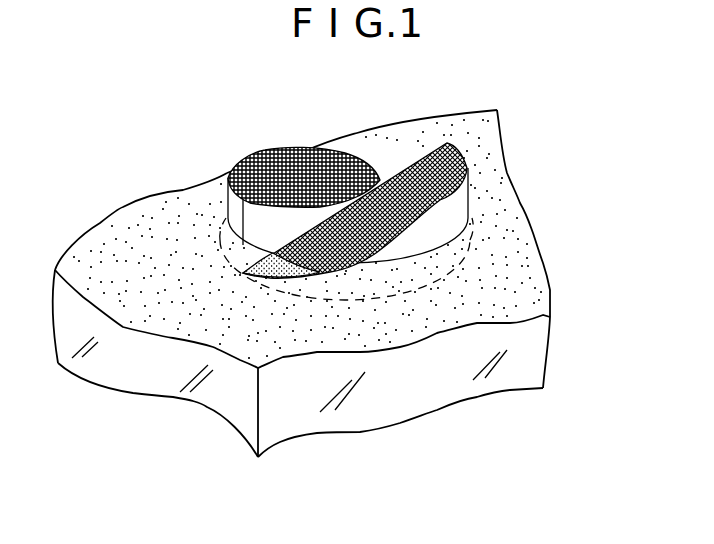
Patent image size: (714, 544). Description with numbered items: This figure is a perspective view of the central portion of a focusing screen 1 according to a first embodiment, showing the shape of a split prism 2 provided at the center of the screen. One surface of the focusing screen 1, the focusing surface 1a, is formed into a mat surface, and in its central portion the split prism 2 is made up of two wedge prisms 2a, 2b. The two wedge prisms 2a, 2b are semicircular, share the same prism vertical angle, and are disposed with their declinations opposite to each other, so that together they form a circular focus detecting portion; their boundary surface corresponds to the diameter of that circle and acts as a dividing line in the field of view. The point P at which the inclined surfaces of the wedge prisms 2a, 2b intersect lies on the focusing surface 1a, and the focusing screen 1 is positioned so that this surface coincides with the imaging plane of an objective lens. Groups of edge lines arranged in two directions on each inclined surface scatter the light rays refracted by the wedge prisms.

The focusing screen 1 is at (535, 345).
The focusing surface 1a is at (513, 260).
The split prism 2 is at (268, 150).
The wedge prism 2a is at (233, 217).
The wedge prism 2b is at (460, 208).
The intersection point P is at (347, 208).